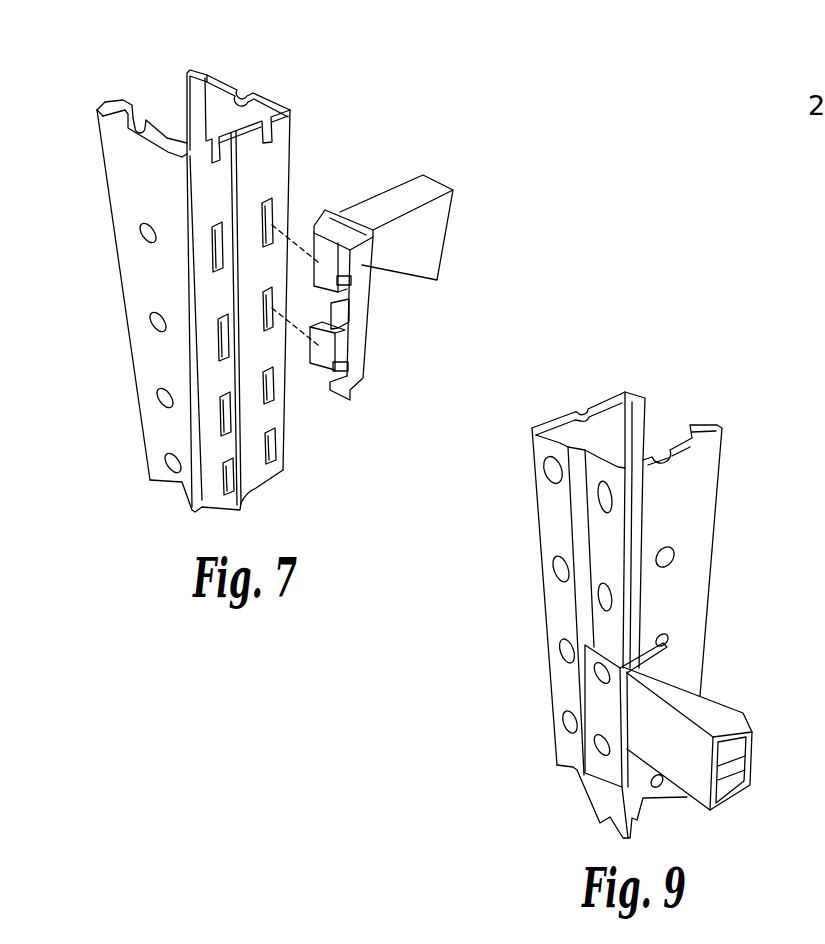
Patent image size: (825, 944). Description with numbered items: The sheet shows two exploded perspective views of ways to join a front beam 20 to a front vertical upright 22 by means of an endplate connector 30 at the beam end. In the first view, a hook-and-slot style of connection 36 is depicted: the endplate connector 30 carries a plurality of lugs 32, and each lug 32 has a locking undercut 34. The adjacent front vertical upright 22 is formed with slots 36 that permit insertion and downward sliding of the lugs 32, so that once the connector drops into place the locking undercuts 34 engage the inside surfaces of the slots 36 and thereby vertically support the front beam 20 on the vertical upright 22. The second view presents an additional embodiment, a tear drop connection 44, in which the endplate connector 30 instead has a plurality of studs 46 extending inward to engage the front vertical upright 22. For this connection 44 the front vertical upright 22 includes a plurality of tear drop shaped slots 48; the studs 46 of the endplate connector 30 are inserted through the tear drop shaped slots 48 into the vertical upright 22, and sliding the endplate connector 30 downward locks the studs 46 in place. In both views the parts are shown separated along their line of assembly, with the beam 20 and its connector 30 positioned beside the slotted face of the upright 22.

In FIG. 7, the front beam 20 is at (420, 187).
In FIG. 9, the front beam 20 is at (713, 710).
In FIG. 7, the front vertical upright 22 is at (122, 153).
In FIG. 9, the front vertical upright 22 is at (700, 462).
In FIG. 7, the endplate connector 30 is at (362, 265).
In FIG. 9, the endplate connector 30 is at (607, 768).
In FIG. 7, the lug 32 is at (305, 230).
In FIG. 7, the locking undercut 34 is at (347, 368).
In FIG. 7, the hook-and-slot connection / slots 36 is at (298, 332).
In FIG. 9, the tear drop connection 44 is at (730, 394).
In FIG. 9, the stud 46 is at (606, 752).
In FIG. 9, the tear drop shaped slot 48 is at (610, 600).